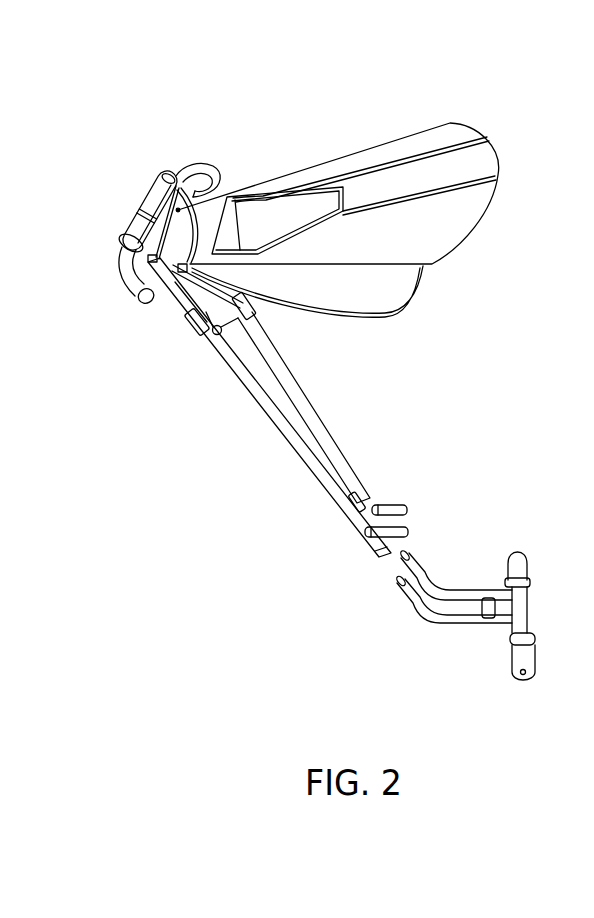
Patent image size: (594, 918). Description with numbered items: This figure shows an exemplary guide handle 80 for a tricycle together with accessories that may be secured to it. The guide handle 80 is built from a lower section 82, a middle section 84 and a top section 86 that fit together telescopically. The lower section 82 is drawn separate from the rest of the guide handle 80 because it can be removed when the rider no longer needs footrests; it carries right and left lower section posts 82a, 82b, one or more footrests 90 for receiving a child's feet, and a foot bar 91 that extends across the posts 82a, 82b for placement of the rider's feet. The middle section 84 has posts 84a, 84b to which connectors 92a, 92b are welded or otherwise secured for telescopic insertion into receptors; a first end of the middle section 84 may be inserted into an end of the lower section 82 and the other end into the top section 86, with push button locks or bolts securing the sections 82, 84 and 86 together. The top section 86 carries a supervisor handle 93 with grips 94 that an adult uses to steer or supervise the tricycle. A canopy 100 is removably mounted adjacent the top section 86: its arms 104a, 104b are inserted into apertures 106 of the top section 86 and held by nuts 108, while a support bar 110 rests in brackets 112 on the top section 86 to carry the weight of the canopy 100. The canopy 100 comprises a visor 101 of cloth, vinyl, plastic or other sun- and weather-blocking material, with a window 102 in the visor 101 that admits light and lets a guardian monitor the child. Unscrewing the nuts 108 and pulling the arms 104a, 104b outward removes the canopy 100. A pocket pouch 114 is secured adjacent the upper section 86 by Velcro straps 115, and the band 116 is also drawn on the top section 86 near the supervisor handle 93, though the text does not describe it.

The guide handle 80 is at (166, 518).
The lower section 82 is at (445, 650).
The right lower section post 82a is at (399, 600).
The left lower section post 82b is at (421, 568).
The middle section 84 is at (284, 478).
The middle section post 84a is at (262, 415).
The middle section post 84b is at (320, 410).
The top section 86 is at (160, 398).
The footrest 90 is at (517, 553).
The foot bar 91 is at (532, 607).
The connector 92a is at (414, 526).
The connector 92b is at (408, 504).
The supervisor handle 93 is at (148, 200).
The grip 94 is at (120, 274).
The canopy 100 is at (487, 307).
The visor 101 is at (455, 123).
The window 102 is at (187, 203).
The canopy arm 104a is at (126, 284).
The canopy arm 104b is at (193, 165).
The aperture 106 is at (120, 241).
The nut 108 is at (162, 175).
The support bar 110 is at (254, 320).
The bracket 112 is at (215, 340).
The pocket pouch 114 is at (144, 332).
The Velcro strap 115 is at (188, 328).
The band 116 is at (134, 219).